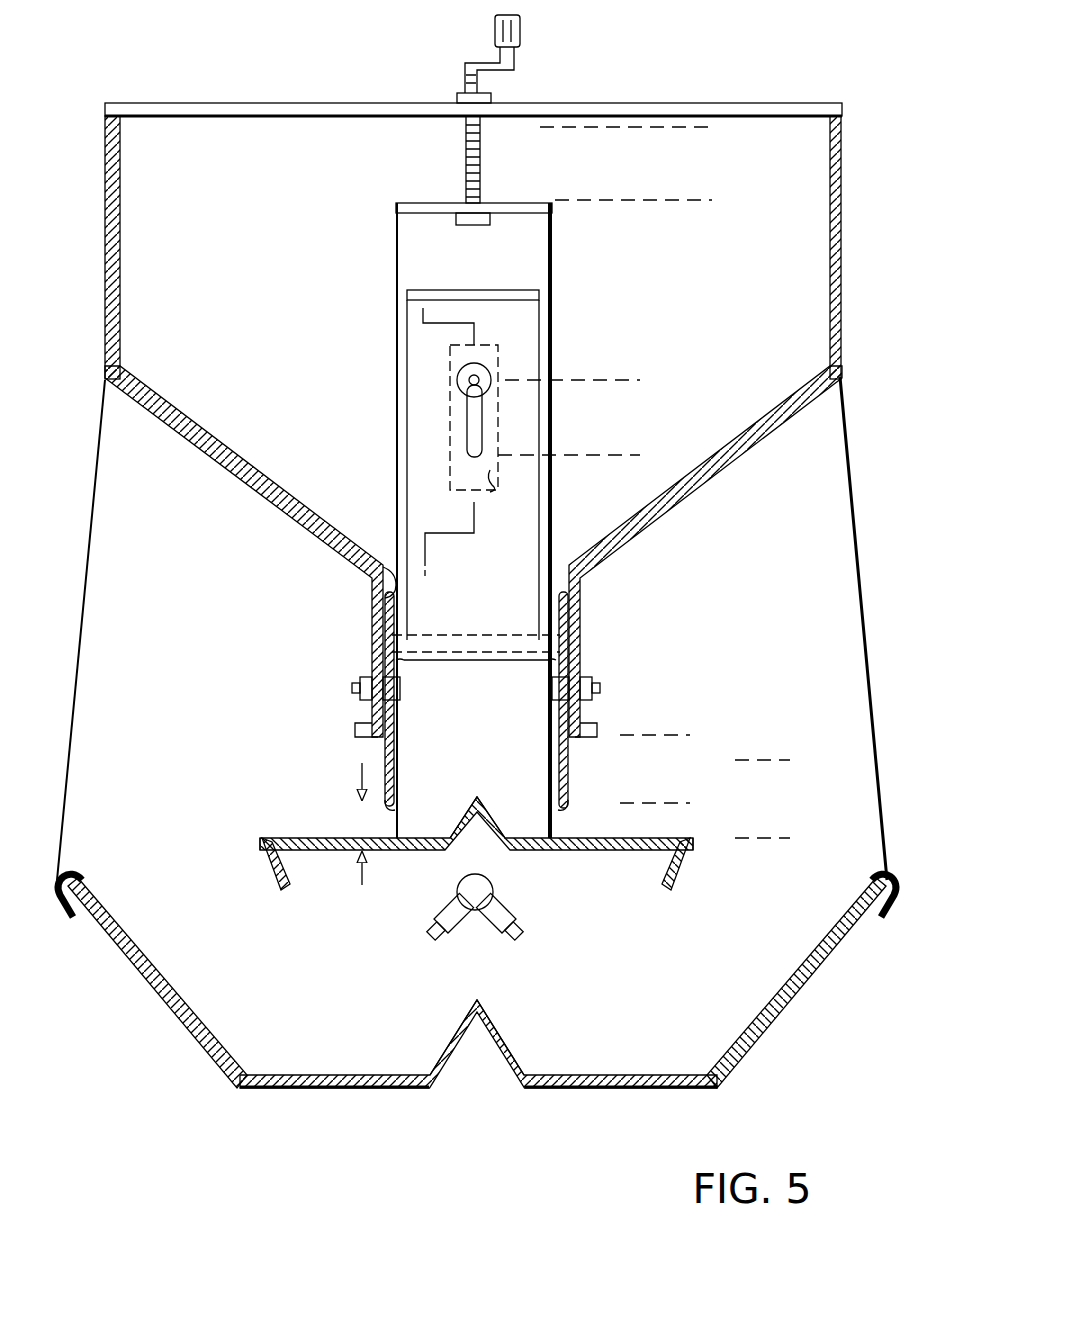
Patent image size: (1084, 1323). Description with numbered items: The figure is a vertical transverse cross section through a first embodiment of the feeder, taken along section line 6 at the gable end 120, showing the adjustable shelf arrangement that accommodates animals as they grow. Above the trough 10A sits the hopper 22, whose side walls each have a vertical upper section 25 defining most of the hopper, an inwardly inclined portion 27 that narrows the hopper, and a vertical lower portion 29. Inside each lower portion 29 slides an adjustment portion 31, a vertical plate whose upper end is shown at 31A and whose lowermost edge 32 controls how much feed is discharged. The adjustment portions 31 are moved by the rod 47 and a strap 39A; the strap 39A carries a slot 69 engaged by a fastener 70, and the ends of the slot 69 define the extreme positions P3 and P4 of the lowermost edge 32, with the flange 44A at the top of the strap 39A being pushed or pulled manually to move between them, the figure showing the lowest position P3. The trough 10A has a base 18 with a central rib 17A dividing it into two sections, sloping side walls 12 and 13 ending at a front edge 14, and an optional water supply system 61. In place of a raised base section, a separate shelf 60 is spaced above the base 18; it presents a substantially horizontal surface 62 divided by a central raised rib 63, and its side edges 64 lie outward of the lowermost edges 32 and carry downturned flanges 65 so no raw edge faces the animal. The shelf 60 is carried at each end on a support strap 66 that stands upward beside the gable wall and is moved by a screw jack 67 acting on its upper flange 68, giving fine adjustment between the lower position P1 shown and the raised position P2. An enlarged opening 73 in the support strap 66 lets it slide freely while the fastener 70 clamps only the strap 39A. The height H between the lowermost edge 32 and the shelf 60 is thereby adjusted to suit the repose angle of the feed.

The section line 6- 6 is at (425, 100).
The trough 10A is at (600, 1058).
The left inclined wall 12 is at (168, 1004).
The right inclined wall 13 is at (788, 996).
The front edge 14 is at (80, 880).
The central rib 17A is at (477, 1000).
The base 18 is at (362, 1074).
The hopper 22 is at (685, 512).
The vertical upper section 25 is at (121, 322).
The inclined portion 27 is at (275, 486).
The vertical lower portion 29 is at (372, 655).
The adjustment portion 31 is at (385, 748).
The bracket top 31A is at (383, 580).
The lowermost edge 32 is at (398, 825).
The strap 39A is at (520, 415).
The flange 44A is at (538, 298).
The rod 47 is at (495, 640).
The shelf 60 is at (432, 872).
The water supply system 61 is at (500, 898).
The horizontal surface 62 is at (362, 850).
The central raised rib 63 is at (480, 797).
The side edges 64 is at (260, 842).
The downturned flange 65 is at (280, 878).
The support strap 66 is at (433, 240).
The screw jack 67 is at (502, 92).
The upper flange 68 is at (445, 200).
The slot 69 is at (470, 430).
The fastener 70 is at (468, 378).
The enlarged opening 73 is at (500, 488).
The gable end 120 is at (180, 738).
The lower shelf position P1 is at (695, 520).
The raised shelf position P2 is at (688, 444).
The lowest edge position P3 is at (621, 588).
The raised edge position P4 is at (617, 596).
The height H is at (365, 818).